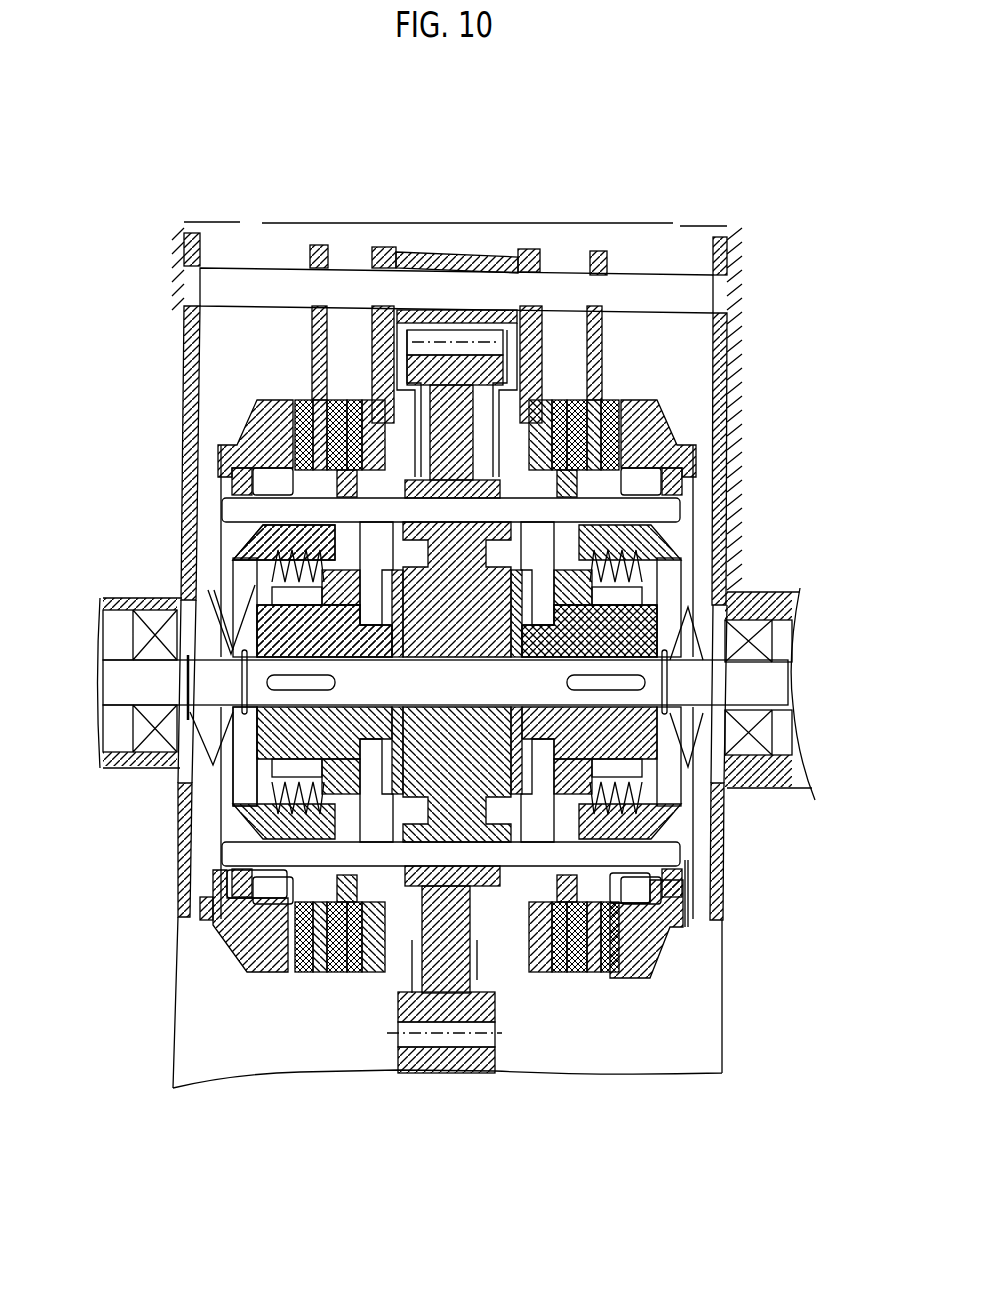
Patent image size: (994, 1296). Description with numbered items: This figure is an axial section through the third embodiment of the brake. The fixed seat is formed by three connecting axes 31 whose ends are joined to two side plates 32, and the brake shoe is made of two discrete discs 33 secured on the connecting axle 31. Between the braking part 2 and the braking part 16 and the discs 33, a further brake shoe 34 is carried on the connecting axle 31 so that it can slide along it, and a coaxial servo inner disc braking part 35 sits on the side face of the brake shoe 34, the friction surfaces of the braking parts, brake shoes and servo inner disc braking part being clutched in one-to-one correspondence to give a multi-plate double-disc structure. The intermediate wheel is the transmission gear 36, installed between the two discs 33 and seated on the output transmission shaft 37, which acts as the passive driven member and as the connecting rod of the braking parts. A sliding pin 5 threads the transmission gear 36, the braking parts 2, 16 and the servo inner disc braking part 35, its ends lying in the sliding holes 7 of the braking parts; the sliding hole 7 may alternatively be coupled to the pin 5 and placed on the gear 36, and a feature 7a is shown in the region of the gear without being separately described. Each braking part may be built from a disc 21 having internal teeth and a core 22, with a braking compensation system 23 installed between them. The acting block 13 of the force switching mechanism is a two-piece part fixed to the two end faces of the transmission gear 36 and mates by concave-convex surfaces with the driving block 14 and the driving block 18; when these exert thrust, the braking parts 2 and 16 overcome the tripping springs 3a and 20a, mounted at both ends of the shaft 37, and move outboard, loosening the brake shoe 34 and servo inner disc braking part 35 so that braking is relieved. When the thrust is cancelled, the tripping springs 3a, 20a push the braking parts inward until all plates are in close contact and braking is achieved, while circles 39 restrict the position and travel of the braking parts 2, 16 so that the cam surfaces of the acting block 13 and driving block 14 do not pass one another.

The braking part 2 is at (647, 438).
The tripping spring 3a is at (745, 640).
The sliding pin 5 is at (658, 516).
The sliding hole 7 is at (335, 555).
The rotor shaft 7a is at (415, 970).
The acting block 13 is at (262, 905).
The driving block 14 is at (580, 627).
The braking part 16 is at (270, 430).
The driving block 18 is at (363, 637).
The tripping spring 20a is at (192, 626).
The disc having internal teeth 21 is at (230, 913).
The core 22 is at (240, 820).
The braking compensation system 23 is at (270, 583).
The connecting axes 31 is at (647, 293).
The side plates 32 is at (186, 348).
The discrete discs 33 is at (384, 247).
The brake shoe 34 is at (318, 245).
The servo inner disc braking part 35 is at (343, 400).
The transmission gear 36 is at (467, 1005).
The output transmission shaft 37 is at (753, 688).
The circles 39 is at (245, 664).